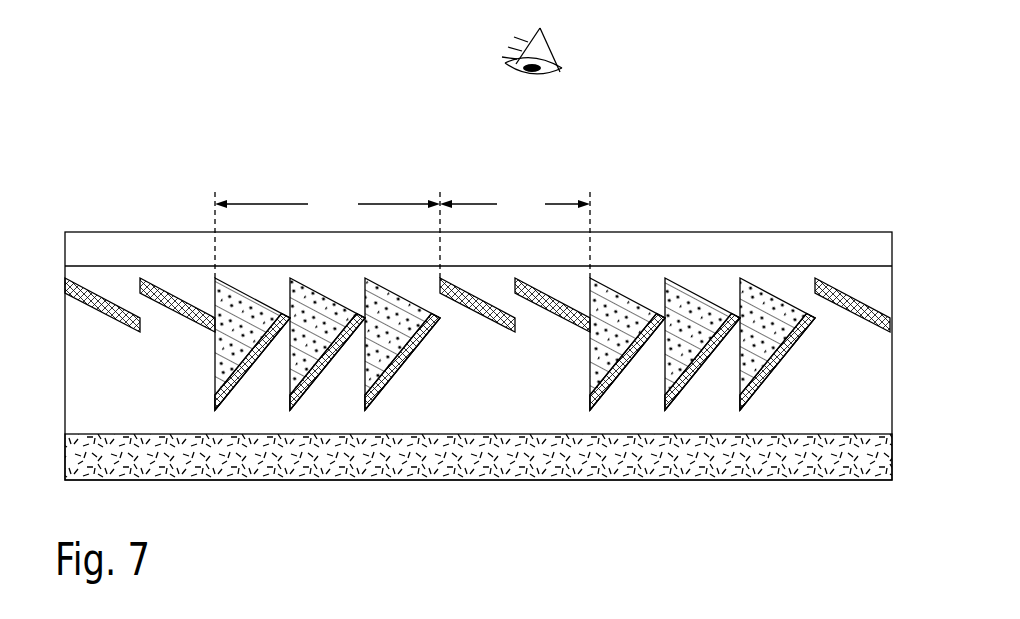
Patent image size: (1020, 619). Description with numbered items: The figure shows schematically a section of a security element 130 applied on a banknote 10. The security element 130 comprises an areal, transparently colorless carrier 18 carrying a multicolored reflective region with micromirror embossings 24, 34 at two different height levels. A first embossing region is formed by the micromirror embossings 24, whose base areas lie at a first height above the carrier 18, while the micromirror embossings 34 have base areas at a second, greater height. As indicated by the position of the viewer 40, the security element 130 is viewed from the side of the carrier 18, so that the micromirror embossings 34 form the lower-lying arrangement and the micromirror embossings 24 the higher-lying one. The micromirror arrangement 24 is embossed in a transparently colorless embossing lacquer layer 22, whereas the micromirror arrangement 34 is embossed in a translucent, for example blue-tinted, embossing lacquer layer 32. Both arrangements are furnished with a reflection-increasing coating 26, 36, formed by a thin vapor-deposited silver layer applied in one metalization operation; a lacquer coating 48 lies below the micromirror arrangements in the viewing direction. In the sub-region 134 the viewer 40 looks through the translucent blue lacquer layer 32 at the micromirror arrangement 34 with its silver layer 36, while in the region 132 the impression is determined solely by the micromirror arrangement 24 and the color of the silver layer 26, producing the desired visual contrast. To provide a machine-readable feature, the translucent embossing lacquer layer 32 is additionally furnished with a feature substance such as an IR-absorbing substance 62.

The banknote 10 is at (880, 457).
The carrier 18 is at (880, 249).
The embossing lacquer layer 22 is at (506, 280).
The micromirror embossings 24 is at (842, 290).
The reflection-increasing coating 26 is at (558, 312).
The embossing lacquer layer 32 is at (486, 344).
The micromirror embossings 34 is at (780, 372).
The reflection-increasing coating 36 is at (515, 301).
The viewer 40 is at (551, 50).
The lacquer coating 48 is at (880, 380).
The IR-absorbing substance 62 is at (437, 344).
The security element 130 is at (130, 145).
The region 132 is at (515, 235).
The sub-region 134 is at (327, 235).